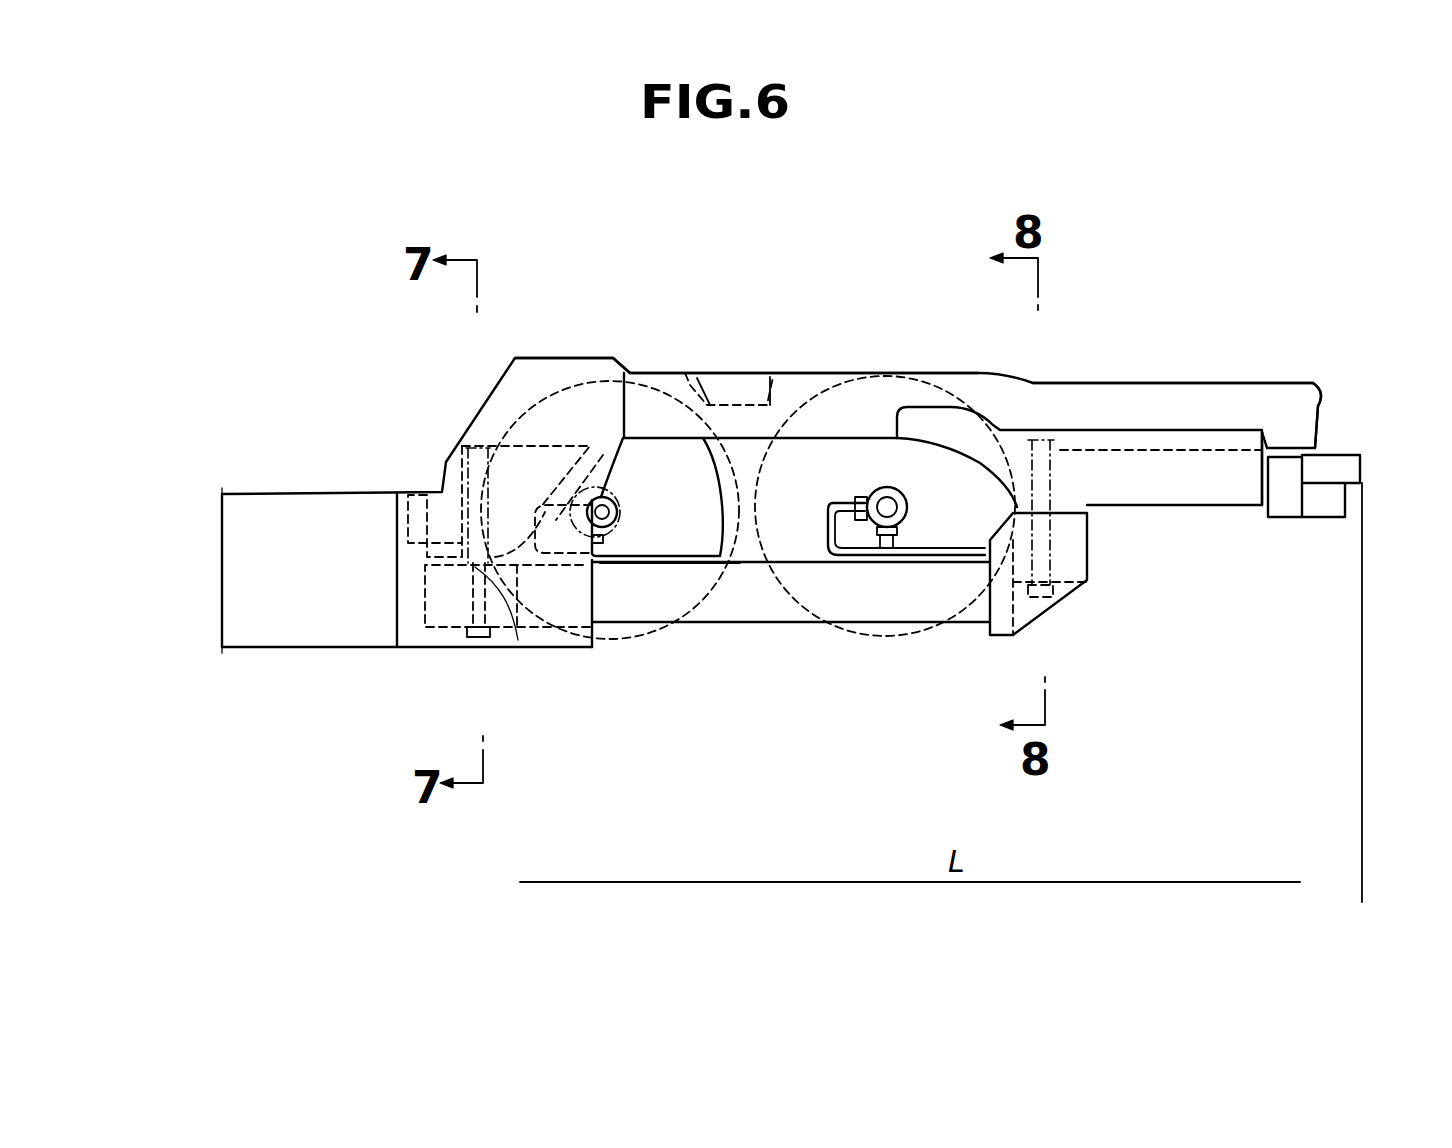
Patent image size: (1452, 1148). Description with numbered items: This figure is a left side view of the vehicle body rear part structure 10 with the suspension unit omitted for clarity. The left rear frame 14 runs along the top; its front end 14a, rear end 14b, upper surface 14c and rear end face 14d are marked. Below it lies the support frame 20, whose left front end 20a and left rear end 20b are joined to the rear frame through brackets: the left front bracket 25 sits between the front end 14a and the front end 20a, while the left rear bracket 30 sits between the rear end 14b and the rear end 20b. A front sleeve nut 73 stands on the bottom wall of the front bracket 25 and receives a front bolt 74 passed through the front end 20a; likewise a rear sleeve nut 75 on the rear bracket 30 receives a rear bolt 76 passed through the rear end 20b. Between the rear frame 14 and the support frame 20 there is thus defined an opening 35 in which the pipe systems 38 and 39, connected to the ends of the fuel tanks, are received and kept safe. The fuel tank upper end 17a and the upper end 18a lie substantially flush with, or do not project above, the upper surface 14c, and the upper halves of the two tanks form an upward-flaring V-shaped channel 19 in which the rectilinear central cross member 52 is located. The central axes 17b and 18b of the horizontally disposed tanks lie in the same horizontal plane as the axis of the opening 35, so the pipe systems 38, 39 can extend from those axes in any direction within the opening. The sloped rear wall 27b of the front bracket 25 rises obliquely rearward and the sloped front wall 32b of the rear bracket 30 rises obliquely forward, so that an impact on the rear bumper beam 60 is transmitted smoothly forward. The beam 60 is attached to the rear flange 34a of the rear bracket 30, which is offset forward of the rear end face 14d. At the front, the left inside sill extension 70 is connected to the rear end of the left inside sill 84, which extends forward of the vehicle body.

The vehicle body rear part structure 10 is at (273, 288).
The left rear frame 14 is at (1063, 383).
The front end of left rear frame 14a is at (548, 358).
The rear end of left rear frame 14b is at (1187, 383).
The upper surface of left rear frame 14c is at (932, 373).
The rear end face of left rear frame 14d is at (1320, 383).
The upper end of first fuel tank 17a is at (597, 378).
The central axis of first fuel tank 17b is at (604, 512).
The upper end of second fuel tank 18a is at (897, 407).
The central axis of second fuel tank 18b is at (887, 505).
The V-shaped channel 19 is at (735, 458).
The support frame 20 is at (705, 625).
The left front end of support frame 20a is at (447, 600).
The left rear end of support frame 20b is at (1077, 560).
The left front bracket 25 is at (515, 466).
The sloped rear wall of left front bracket 27b is at (604, 488).
The left rear bracket 30 is at (1163, 482).
The sloped front wall of left rear bracket 32b is at (973, 462).
The rear flange of outer sidewall 34a is at (1272, 483).
The left opening 35 is at (808, 467).
The pipe system 38 is at (552, 567).
The pipe system 39 is at (943, 556).
The central cross member 52 is at (720, 373).
The rear bumper beam 60 is at (1353, 473).
The left inside sill extension 70 is at (410, 550).
The front sleeve nut 73 is at (467, 466).
The front bolt 74 is at (477, 637).
The rear sleeve nut 75 is at (1048, 440).
The rear bolt 76 is at (1047, 610).
The left inside sill 84 is at (258, 630).